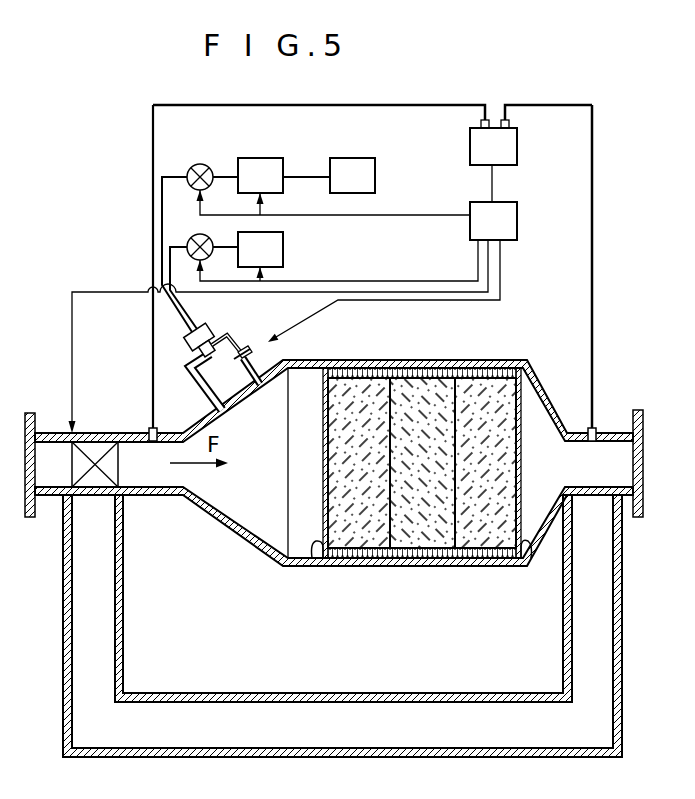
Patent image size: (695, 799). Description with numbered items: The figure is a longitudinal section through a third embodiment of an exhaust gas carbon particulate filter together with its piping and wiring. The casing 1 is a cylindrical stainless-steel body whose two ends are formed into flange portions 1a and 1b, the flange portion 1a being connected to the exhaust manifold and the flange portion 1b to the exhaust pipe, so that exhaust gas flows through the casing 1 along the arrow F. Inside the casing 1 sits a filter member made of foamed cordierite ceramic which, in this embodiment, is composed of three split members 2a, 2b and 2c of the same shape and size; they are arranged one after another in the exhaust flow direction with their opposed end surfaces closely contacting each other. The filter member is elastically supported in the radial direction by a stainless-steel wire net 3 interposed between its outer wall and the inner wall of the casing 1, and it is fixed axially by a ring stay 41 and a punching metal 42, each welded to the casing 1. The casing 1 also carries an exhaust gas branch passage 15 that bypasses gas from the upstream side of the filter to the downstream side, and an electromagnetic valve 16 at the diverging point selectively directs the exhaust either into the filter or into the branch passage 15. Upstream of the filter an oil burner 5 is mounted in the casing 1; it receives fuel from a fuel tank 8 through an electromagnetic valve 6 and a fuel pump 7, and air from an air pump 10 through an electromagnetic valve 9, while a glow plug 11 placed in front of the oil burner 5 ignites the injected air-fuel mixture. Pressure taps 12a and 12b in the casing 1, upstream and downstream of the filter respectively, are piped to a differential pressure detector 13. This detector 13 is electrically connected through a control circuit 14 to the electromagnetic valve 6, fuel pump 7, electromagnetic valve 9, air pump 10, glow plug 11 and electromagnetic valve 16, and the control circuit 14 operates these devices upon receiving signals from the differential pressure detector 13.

The casing 1 is at (476, 361).
The flange portion 1a is at (31, 518).
The flange portion 1b is at (638, 518).
The split member 2a is at (361, 527).
The split member 2b is at (426, 533).
The split member 2c is at (486, 523).
The wire net 3 is at (430, 372).
The oil burner 5 is at (205, 332).
The electromagnetic valve 6 is at (203, 164).
The fuel pump 7 is at (248, 175).
The fuel tank 8 is at (329, 175).
The electromagnetic valve 9 is at (190, 236).
The air pump 10 is at (248, 249).
The glow plug 11 is at (248, 350).
The pressure tap 12a is at (150, 431).
The pressure tap 12b is at (594, 427).
The differential pressure detector 13 is at (372, 135).
The control circuit 14 is at (293, 299).
The exhaust gas branch passage 15 is at (315, 716).
The electromagnetic valve 16 is at (97, 488).
The ring stay 41 is at (316, 561).
The punching metal 42 is at (530, 566).